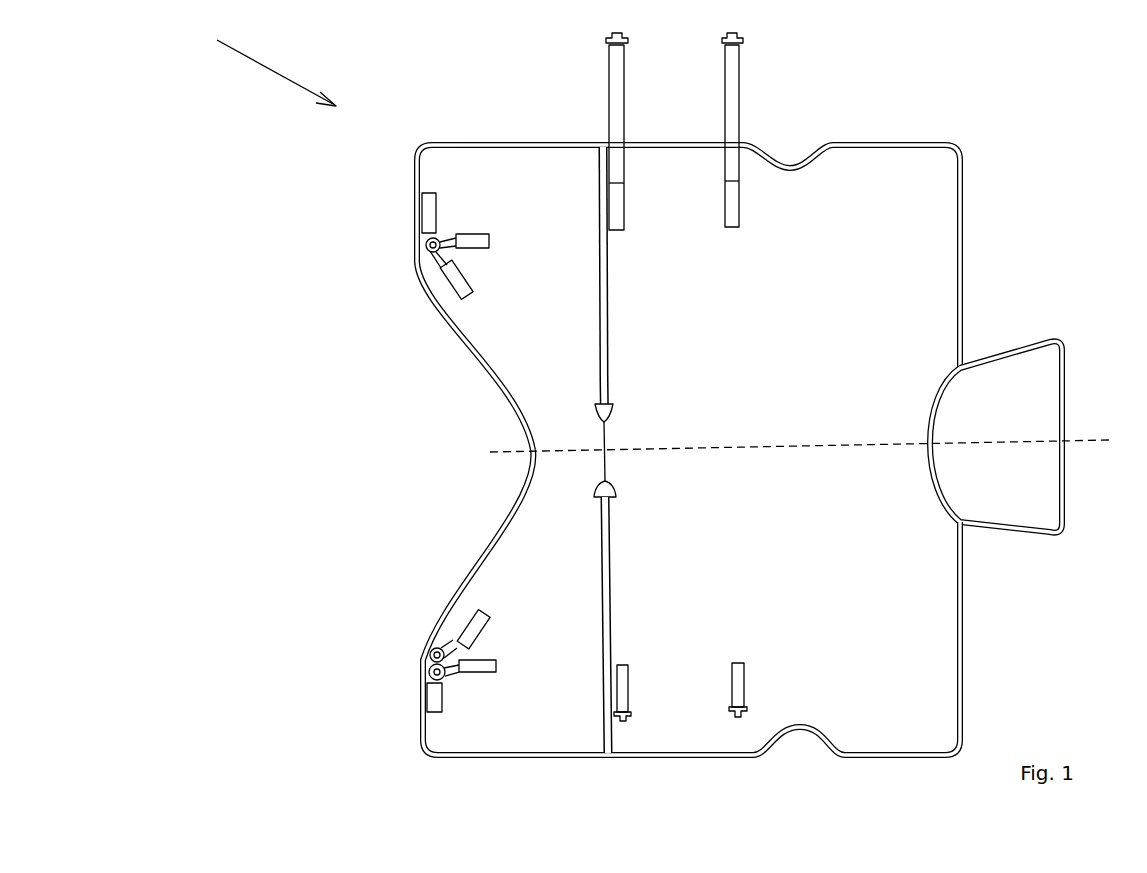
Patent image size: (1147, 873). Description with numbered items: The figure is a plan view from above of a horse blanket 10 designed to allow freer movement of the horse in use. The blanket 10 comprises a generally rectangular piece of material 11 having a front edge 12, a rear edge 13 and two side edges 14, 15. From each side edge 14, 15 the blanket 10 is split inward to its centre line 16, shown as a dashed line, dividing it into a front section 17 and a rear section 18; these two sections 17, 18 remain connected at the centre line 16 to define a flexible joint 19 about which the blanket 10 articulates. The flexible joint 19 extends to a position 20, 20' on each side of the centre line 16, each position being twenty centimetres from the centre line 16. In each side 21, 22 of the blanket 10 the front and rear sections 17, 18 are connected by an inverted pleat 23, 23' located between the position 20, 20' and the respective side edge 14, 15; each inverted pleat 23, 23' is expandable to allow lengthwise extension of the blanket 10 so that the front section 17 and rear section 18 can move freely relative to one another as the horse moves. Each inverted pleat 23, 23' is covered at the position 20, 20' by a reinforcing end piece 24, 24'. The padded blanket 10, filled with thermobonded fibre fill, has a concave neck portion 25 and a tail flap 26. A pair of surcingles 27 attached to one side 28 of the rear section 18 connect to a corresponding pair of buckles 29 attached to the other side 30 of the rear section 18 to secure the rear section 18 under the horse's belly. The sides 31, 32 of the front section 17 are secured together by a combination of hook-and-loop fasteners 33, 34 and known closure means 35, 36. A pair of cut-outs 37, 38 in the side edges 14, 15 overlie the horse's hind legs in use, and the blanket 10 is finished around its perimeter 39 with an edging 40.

The horse blanket 10 is at (260, 68).
The generally rectangular piece of material 11 is at (880, 172).
The front edge 12 is at (436, 305).
The rear edge 13 is at (962, 303).
The side edge 14 is at (549, 146).
The side edge 15 is at (550, 758).
The centre line 16 is at (762, 448).
The front section 17 is at (482, 558).
The rear section 18 is at (937, 641).
The flexible joint 19 is at (600, 442).
The position 20 is at (527, 498).
The position 20' is at (524, 396).
The side of the blanket 21 is at (510, 167).
The side of the blanket 22 is at (518, 742).
The inverted pleat 23 is at (642, 636).
The inverted pleat 23' is at (633, 263).
The reinforcing end piece 24 is at (637, 490).
The reinforcing end piece 24' is at (639, 406).
The concave neck portion 25 is at (458, 568).
The tail flap 26 is at (1045, 395).
The surcingles 27 is at (733, 100).
The side of the rear section 28 is at (768, 192).
The buckles 29 is at (630, 700).
The side of the rear section 30 is at (716, 737).
The side of the front section 31 is at (450, 178).
The side of the front section 32 is at (435, 737).
The hook-and-loop fastener 33 is at (428, 215).
The hook-and-loop fastener 34 is at (434, 700).
The closure means 35 is at (432, 258).
The closure means 36 is at (428, 658).
The cut-out 37 is at (808, 176).
The cut-out 38 is at (780, 735).
The perimeter 39 is at (962, 192).
The edging 40 is at (962, 238).